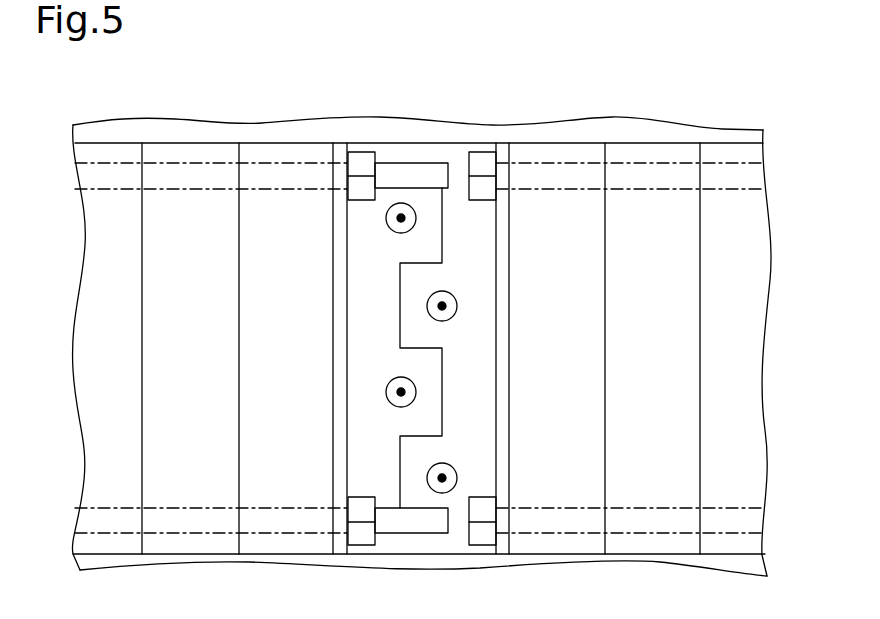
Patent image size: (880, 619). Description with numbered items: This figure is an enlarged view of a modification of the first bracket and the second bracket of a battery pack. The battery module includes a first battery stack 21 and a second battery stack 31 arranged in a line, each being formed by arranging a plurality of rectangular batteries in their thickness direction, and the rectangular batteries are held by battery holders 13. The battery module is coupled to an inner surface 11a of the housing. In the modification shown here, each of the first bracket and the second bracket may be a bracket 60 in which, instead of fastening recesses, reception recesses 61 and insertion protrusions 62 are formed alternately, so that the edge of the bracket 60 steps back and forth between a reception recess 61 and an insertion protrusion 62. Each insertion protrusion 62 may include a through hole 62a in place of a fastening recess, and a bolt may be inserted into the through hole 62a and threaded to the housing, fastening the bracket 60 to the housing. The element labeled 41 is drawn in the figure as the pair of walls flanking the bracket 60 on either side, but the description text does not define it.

The first battery stack 21 is at (174, 131).
The battery holder 13 is at (217, 143).
The second battery stack 31 is at (657, 131).
The inner surface 11a is at (735, 139).
The side wall 41 is at (333, 348).
The bracket 60 is at (379, 143).
The reception recess 61 is at (436, 152).
The insertion protrusion 62 is at (437, 238).
The through hole 62a is at (401, 218).